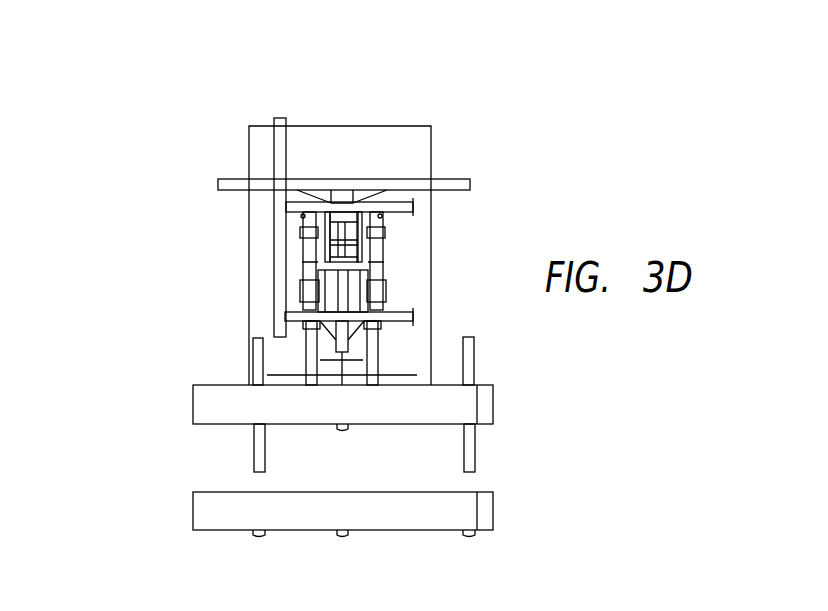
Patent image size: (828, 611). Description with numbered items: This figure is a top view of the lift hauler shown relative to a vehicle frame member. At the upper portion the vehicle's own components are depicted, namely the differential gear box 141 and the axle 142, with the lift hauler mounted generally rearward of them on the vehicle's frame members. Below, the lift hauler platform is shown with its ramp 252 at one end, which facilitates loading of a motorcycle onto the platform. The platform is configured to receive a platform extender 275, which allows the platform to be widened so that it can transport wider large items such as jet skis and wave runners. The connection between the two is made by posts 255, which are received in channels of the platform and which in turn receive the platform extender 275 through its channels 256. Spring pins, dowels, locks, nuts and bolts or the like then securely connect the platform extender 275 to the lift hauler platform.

The differential gear box 141 is at (343, 173).
The axle 142 is at (452, 177).
The ramp 252 is at (497, 382).
The posts 255 is at (233, 448).
The channels 256 is at (260, 492).
The platform extender 275 is at (192, 502).